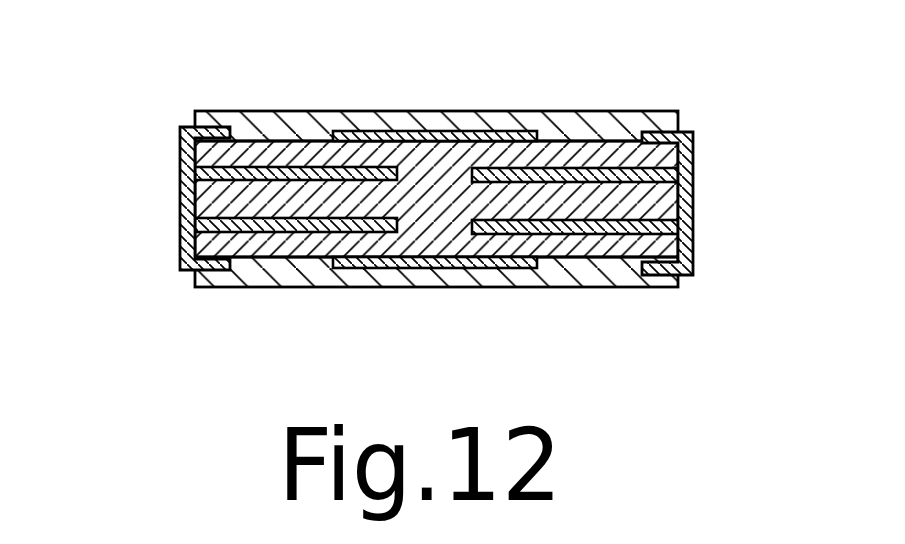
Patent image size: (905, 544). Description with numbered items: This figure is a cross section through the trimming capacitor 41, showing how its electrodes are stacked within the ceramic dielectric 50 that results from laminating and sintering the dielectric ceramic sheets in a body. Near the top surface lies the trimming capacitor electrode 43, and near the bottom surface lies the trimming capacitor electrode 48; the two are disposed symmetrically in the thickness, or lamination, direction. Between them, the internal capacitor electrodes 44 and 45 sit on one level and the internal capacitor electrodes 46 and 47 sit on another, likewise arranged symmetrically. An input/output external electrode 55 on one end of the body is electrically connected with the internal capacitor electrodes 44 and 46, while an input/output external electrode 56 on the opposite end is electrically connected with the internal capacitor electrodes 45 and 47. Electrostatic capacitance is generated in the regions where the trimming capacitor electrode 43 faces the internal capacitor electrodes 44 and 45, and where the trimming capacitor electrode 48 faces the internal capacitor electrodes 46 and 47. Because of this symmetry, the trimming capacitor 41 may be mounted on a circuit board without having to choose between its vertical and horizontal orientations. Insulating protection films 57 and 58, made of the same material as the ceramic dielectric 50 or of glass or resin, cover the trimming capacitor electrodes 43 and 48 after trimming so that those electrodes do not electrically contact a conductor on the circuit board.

The trimming capacitor 41 is at (410, 200).
The trimming capacitor electrode 43 is at (431, 125).
The internal capacitor electrode 44 is at (295, 170).
The internal capacitor electrode 45 is at (545, 163).
The internal capacitor electrode 46 is at (282, 223).
The internal capacitor electrode 47 is at (577, 237).
The trimming capacitor electrode 48 is at (422, 268).
The ceramic dielectric 50 is at (618, 152).
The input/output external electrode 55 is at (181, 168).
The input/output external electrode 56 is at (693, 183).
The insulating protection film 57 is at (235, 110).
The insulating protection film 58 is at (227, 287).